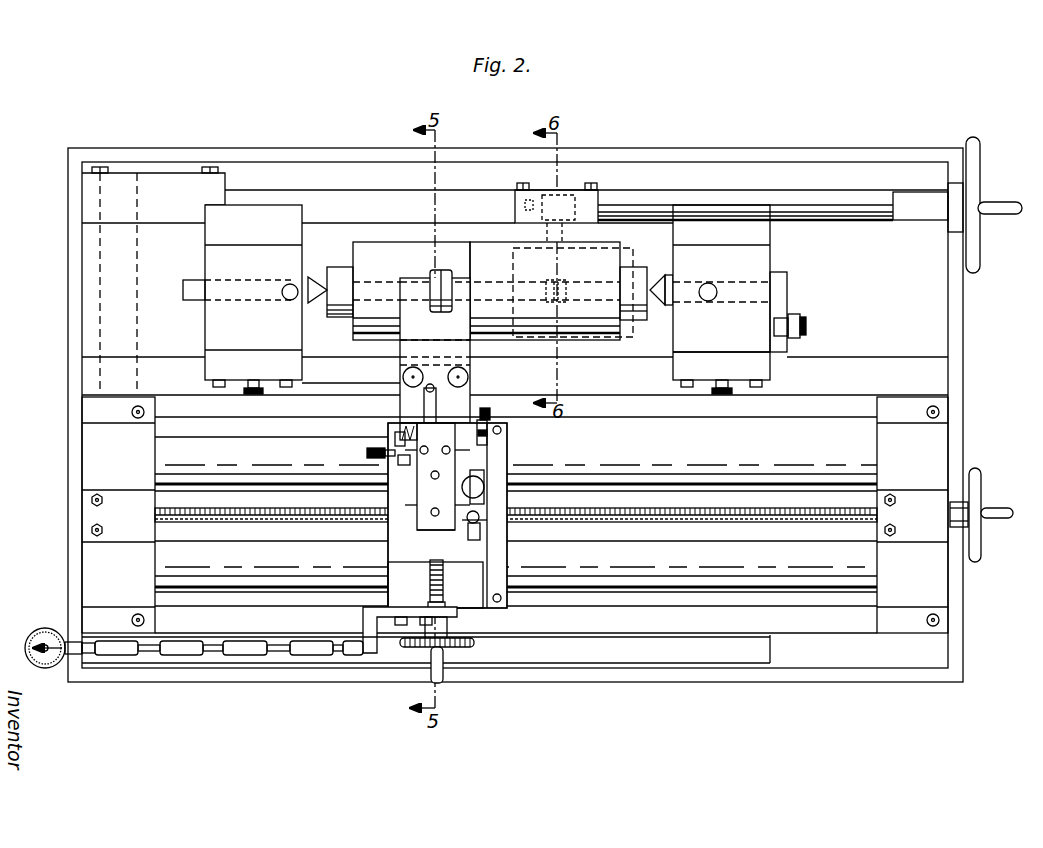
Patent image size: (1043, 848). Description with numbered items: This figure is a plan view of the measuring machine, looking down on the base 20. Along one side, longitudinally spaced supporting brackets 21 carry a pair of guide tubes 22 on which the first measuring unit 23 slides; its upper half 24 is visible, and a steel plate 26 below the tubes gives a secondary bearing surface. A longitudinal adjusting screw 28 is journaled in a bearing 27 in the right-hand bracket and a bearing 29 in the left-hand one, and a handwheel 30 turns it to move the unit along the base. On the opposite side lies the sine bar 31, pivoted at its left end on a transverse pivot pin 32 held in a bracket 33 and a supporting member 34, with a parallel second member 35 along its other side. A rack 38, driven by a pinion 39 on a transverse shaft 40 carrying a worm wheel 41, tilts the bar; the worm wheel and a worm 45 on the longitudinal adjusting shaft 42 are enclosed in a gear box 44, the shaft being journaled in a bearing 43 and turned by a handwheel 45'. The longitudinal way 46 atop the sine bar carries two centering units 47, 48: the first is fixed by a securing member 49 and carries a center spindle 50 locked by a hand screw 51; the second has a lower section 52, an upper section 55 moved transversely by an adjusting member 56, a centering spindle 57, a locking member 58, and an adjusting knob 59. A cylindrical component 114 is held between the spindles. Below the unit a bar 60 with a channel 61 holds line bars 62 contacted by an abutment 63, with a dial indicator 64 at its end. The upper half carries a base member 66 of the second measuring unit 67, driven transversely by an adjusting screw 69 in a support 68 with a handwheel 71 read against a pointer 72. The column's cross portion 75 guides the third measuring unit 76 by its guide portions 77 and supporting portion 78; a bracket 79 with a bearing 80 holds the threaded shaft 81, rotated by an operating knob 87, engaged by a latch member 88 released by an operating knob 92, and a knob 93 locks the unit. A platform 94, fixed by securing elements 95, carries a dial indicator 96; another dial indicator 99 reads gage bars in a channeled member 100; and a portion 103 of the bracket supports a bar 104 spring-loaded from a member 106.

The base 20 is at (806, 676).
The supporting brackets 21 is at (90, 463).
The tubes 22 is at (850, 461).
The first measuring unit 23 is at (512, 553).
The upper half 24 is at (419, 581).
The steel plate 26 is at (850, 610).
The bearing 27 is at (903, 535).
The adjusting screw 28 is at (745, 523).
The bearing 29 is at (90, 517).
The handwheel 30 is at (983, 491).
The sine bar 31 is at (912, 304).
The pivot pin 32 is at (137, 228).
The bracket 33 is at (158, 180).
The supporting member 34 is at (160, 360).
The second member 35 is at (302, 196).
The rack 38 is at (515, 283).
The pinion 39 is at (616, 293).
The transverse shaft 40 is at (547, 233).
The worm wheel 41 is at (515, 208).
The adjusting shaft 42 is at (821, 203).
The bearing 43 is at (936, 224).
The gear box 44 is at (565, 193).
The worm 45 is at (587, 235).
The handwheel 45' is at (994, 205).
The longitudinal way 46 is at (915, 362).
The centering unit 47 is at (256, 234).
The centering unit 48 is at (734, 234).
The securing member 49 is at (249, 393).
The center spindle 50 is at (312, 284).
The hand screw 51 is at (290, 300).
The lower section 52 is at (772, 372).
The upper section 55 is at (772, 262).
The adjusting member 56 is at (733, 405).
The centering spindle 57 is at (665, 287).
The locking member 58 is at (716, 288).
The adjusting knob 59 is at (806, 324).
The bar 60 is at (263, 660).
The channel 61 is at (220, 660).
The line bars 62 is at (168, 660).
The abutment 63 is at (363, 615).
The dial indicator 64 is at (44, 628).
The base member 66 is at (388, 559).
The second measuring unit 67 is at (387, 532).
The support 68 is at (448, 608).
The adjusting screw 69 is at (435, 585).
The handwheel 71 is at (445, 672).
The pointer 72 is at (455, 640).
The cross portion 75 is at (428, 476).
The third measuring unit 76 is at (398, 366).
The guide portions 77 is at (488, 424).
The supporting portion 78 is at (445, 341).
The bracket 79 is at (445, 530).
The bearing 80 is at (395, 440).
The threaded shaft 81 is at (439, 427).
The operating knob 87 is at (507, 445).
The latch member 88 is at (403, 414).
The operating knob 92 is at (486, 408).
The knob 93 is at (367, 453).
The platform 94 is at (411, 279).
The securing elements 95 is at (435, 370).
The dial indicator 96 is at (446, 272).
The dial indicator 99 is at (484, 488).
The channeled member 100 is at (455, 500).
The longitudinally directed portion 103 is at (479, 515).
The bar 104 is at (480, 521).
The member 106 is at (470, 546).
The cylindrical component 114 is at (376, 243).